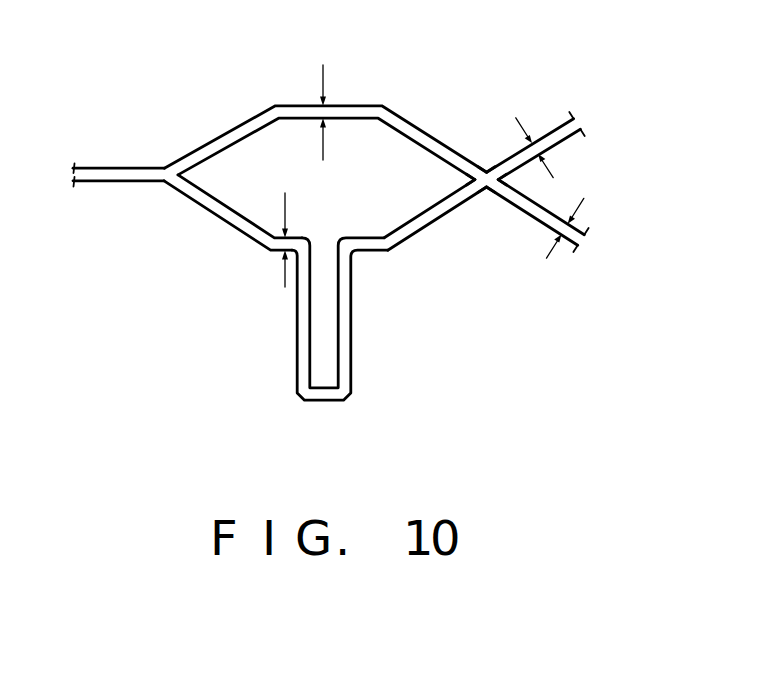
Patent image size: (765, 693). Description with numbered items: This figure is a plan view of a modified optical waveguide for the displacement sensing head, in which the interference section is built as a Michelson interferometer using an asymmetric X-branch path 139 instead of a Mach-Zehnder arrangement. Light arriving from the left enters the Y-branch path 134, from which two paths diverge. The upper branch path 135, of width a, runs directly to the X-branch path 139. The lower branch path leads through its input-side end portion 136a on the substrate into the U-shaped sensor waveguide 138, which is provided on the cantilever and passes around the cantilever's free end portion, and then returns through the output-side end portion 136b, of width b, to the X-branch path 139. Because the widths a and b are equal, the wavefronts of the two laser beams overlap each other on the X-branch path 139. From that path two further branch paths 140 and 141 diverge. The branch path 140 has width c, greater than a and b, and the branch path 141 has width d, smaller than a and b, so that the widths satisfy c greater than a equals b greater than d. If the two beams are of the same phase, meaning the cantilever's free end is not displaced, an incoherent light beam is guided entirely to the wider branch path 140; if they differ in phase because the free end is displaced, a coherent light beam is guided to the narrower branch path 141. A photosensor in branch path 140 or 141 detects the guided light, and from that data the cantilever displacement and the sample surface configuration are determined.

The second Y-branch path 134 is at (166, 156).
The branch path 135 is at (243, 121).
The input-side end portion 136a is at (214, 212).
The output-side end portion 136b is at (435, 222).
The U-shaped sensor waveguide 138 is at (352, 337).
The asymmetric X-branch path 139 is at (486, 150).
The branch path 140 is at (584, 135).
The branch path 141 is at (546, 224).
The width a is at (333, 111).
The width b is at (296, 237).
The width c is at (534, 135).
The width d is at (576, 225).